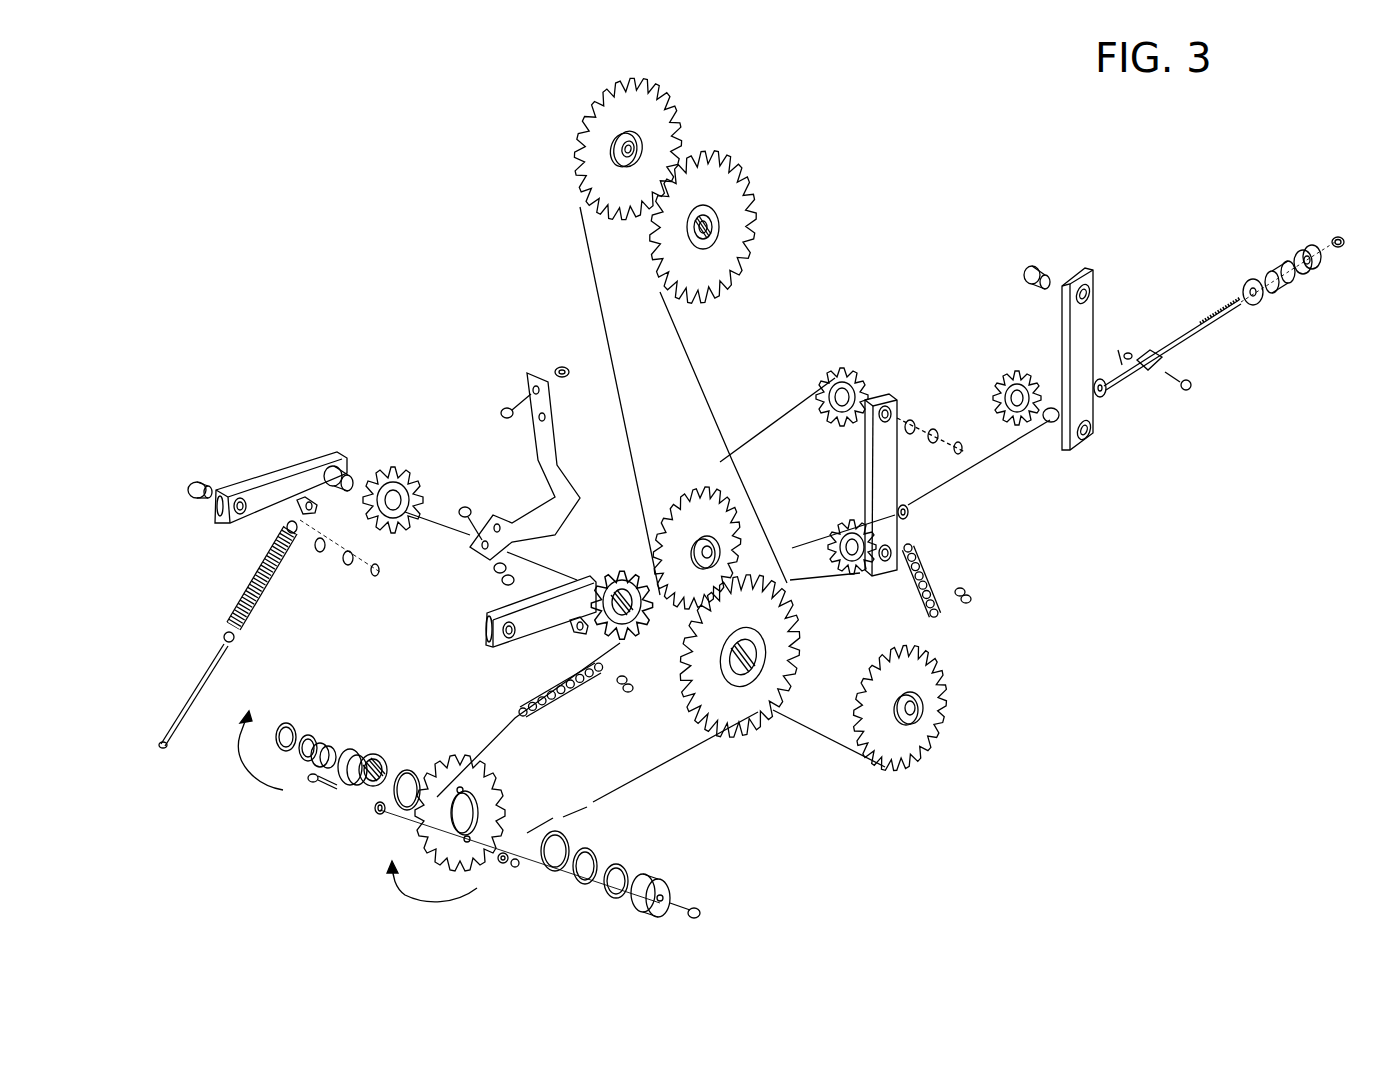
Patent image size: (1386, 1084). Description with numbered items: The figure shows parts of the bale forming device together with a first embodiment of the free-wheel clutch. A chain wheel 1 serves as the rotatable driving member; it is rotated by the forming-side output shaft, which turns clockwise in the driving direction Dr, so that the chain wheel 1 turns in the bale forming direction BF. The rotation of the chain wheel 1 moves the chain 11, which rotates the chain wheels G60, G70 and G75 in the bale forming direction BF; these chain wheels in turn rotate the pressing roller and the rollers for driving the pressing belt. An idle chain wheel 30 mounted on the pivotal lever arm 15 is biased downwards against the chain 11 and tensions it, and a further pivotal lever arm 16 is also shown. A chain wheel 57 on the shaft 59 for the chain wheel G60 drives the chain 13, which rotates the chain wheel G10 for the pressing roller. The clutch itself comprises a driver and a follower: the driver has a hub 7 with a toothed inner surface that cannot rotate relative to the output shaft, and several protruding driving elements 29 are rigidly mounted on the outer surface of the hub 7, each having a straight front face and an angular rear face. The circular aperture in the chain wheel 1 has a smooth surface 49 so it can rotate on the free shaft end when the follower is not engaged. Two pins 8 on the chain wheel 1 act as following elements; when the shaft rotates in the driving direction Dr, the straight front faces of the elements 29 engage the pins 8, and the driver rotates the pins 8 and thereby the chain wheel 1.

The chain wheel G70 is at (657, 105).
The chain wheel G75 is at (736, 186).
The chain wheel G10 is at (695, 490).
The chain wheel G60 is at (735, 712).
The chain 13 is at (928, 560).
The further pivotal lever arm 16 is at (292, 462).
The shaft 59 is at (339, 468).
The pivotal lever arm 15 is at (589, 578).
The idle chain wheel 30 is at (548, 620).
The chain 11 is at (596, 688).
The chain wheel 57 is at (674, 647).
The chain wheel 1 is at (453, 770).
The smooth surface 49 is at (467, 848).
The hub 7 is at (372, 754).
The protruding driving elements 29 is at (352, 752).
The pins 8 is at (313, 784).
The driving direction Dr is at (241, 770).
The bale forming direction BF is at (412, 897).